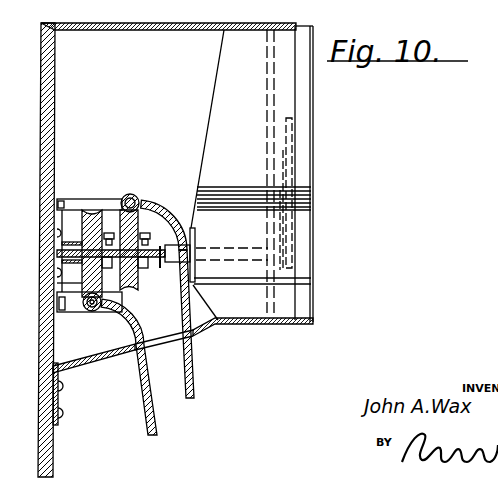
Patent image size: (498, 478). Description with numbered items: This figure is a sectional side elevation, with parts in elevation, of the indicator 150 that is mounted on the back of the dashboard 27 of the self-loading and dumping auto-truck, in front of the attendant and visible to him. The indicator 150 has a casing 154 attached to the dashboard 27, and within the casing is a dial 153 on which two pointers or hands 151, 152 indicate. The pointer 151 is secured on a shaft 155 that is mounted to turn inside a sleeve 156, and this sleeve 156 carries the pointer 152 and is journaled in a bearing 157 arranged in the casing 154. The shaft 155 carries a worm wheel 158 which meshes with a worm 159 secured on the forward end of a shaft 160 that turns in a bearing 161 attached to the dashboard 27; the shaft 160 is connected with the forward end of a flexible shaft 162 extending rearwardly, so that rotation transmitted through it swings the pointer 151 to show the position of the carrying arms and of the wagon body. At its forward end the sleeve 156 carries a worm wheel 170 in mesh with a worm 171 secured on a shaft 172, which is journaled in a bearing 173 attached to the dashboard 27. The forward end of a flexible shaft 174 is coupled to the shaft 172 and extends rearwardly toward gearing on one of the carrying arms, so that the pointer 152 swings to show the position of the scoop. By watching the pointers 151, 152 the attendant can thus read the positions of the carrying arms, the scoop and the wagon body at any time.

The dashboard 27 is at (42, 82).
The indicator 150 is at (321, 174).
The pointer 151 is at (293, 163).
The pointer 152 is at (275, 176).
The dial 153 is at (268, 109).
The casing 154 is at (190, 129).
The shaft 155 is at (160, 266).
The sleeve 156 is at (190, 226).
The bearing 157 is at (196, 241).
The worm wheel 158 is at (56, 289).
The worm 159 is at (91, 312).
The shaft 160 is at (97, 311).
The bearing 161 is at (44, 322).
The flexible shaft 162 is at (148, 408).
The worm wheel 170 is at (114, 215).
The worm 171 is at (146, 200).
The shaft 172 is at (131, 194).
The bearing 173 is at (78, 199).
The flexible shaft 174 is at (191, 376).